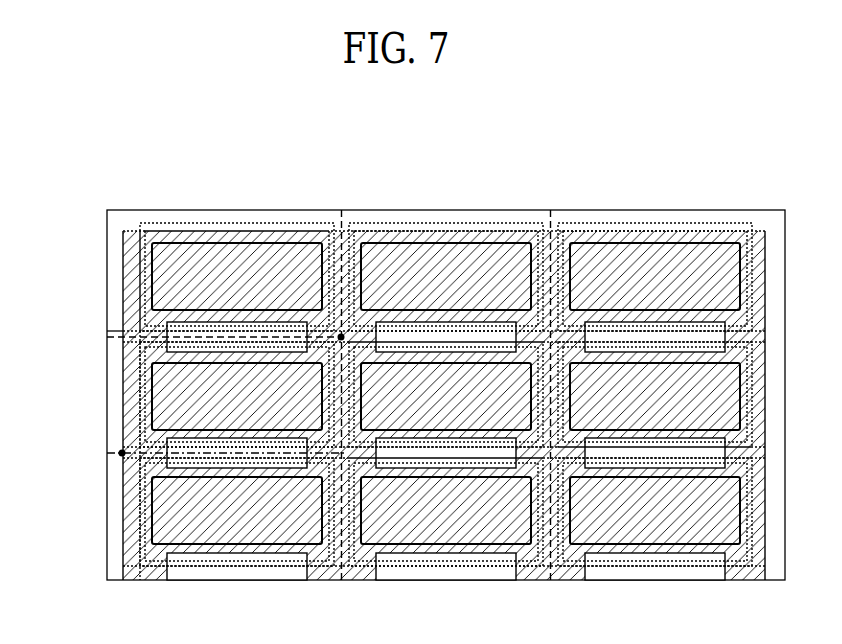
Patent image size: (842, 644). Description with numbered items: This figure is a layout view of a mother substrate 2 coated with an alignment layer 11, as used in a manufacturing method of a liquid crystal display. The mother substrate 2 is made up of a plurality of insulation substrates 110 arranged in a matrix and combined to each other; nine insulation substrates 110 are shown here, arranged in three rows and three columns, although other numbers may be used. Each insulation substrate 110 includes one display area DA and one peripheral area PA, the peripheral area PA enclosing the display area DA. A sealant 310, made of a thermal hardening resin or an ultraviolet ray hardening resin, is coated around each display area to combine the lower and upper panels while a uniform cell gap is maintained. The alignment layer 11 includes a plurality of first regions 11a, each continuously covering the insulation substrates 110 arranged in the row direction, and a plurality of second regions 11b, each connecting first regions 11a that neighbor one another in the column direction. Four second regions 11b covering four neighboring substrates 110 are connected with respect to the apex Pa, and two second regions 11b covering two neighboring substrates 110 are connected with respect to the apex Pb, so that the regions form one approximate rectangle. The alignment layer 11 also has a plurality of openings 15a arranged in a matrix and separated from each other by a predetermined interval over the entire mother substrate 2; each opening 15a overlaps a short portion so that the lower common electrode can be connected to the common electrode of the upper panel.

The mother substrate 2 is at (445, 210).
The opening 15a is at (182, 322).
The peripheral area PA is at (148, 262).
The sealant 310 is at (642, 222).
The first region 11a is at (540, 278).
The display area DA is at (221, 243).
The insulation substrate 110 is at (342, 222).
The second region 11b is at (122, 331).
The alignment layer 11 is at (46, 290).
The apex Pa is at (341, 337).
The apex Pb is at (122, 453).